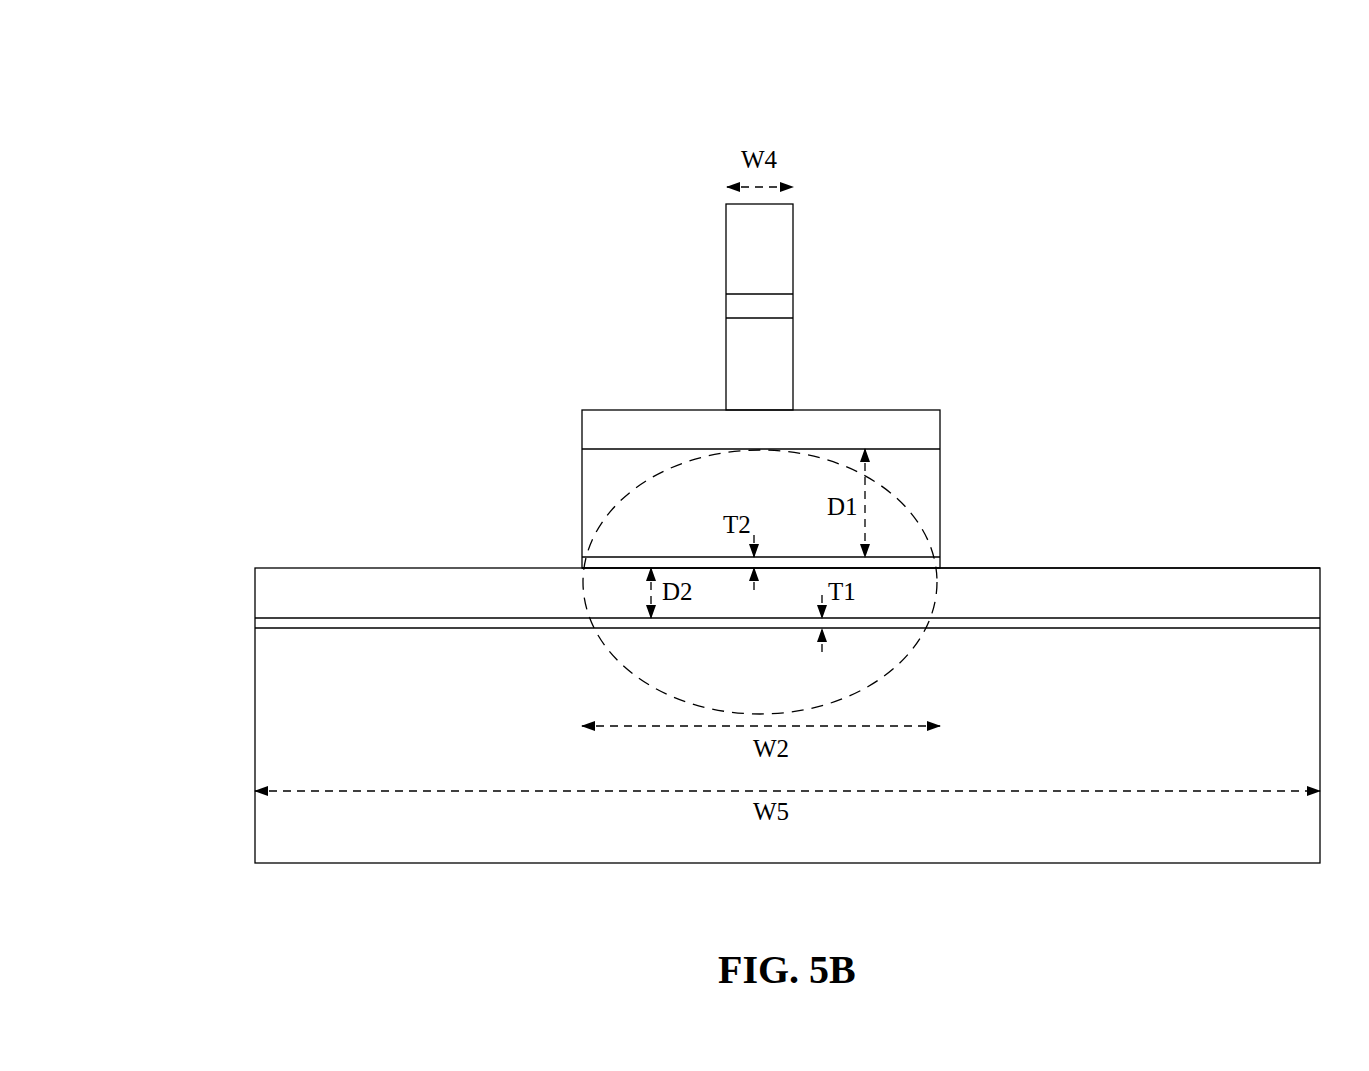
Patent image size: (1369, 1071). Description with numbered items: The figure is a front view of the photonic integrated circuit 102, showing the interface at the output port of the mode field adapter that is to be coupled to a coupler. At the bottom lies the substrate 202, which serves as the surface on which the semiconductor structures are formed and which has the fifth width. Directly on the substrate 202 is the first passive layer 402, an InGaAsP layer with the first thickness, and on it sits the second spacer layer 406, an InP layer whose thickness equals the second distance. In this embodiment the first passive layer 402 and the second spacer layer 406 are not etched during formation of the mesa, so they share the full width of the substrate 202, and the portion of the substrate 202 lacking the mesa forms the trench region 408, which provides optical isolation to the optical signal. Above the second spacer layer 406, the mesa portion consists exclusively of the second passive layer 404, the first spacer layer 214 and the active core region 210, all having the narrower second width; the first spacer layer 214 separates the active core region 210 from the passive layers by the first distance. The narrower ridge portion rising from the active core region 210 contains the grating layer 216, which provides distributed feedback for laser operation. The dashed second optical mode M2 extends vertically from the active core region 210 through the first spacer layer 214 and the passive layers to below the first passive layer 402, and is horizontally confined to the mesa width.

The photonic integrated circuit 102 is at (143, 122).
The substrate 202 is at (787, 715).
The active core region 210 is at (903, 428).
The first spacer layer 214 is at (603, 473).
The grating layer 216 is at (748, 303).
The first passive layer 402 is at (1022, 625).
The second passive layer 404 is at (907, 563).
The second spacer layer 406 is at (467, 605).
The trench region 408 is at (1205, 565).
The second optical mode M2 is at (907, 505).